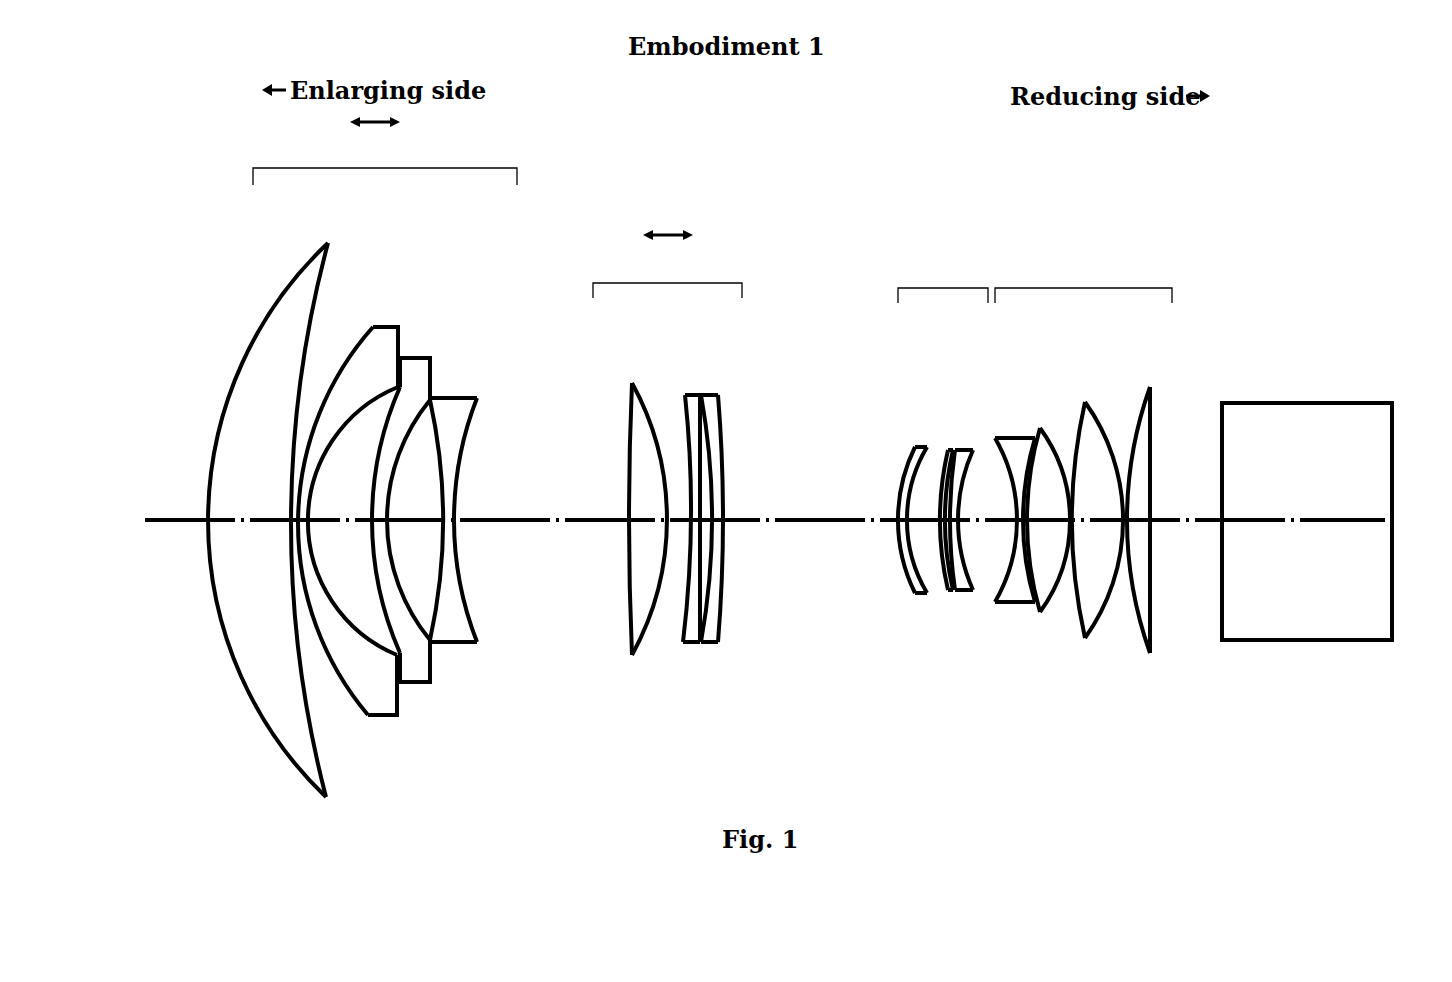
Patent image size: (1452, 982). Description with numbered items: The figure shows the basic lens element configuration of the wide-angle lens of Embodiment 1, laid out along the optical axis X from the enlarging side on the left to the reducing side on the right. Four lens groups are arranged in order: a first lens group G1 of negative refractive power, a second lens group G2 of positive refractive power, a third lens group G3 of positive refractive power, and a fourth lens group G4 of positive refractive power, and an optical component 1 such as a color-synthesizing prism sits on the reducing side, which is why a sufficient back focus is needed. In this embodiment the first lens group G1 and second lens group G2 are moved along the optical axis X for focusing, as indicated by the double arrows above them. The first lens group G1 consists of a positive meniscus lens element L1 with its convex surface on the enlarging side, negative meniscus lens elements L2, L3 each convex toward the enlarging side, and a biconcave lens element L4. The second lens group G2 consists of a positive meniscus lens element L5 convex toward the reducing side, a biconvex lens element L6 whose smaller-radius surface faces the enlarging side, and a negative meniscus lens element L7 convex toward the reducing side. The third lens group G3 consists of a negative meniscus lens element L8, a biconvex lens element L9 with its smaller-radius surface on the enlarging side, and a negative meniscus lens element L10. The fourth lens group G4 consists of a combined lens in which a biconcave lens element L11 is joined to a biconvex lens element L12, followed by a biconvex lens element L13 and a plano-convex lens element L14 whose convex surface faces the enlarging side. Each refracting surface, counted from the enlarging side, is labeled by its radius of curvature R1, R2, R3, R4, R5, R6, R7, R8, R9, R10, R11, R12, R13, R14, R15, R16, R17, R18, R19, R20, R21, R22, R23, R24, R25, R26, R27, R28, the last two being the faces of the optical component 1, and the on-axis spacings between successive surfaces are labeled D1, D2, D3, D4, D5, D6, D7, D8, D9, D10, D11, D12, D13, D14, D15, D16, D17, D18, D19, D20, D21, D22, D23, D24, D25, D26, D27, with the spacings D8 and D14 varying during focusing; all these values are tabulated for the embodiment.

The optical component 1 is at (1309, 489).
The optical axis X is at (163, 530).
The first lens group G1 is at (385, 151).
The second lens group G2 is at (667, 264).
The third lens group G3 is at (943, 278).
The fourth lens group G4 is at (1083, 278).
The positive meniscus lens element L1 is at (274, 486).
The negative meniscus lens element L2 is at (348, 491).
The negative meniscus lens element L3 is at (391, 485).
The biconcave lens element L4 is at (451, 485).
The positive meniscus lens element L5 is at (631, 502).
The biconvex lens element L6 is at (721, 509).
The negative meniscus lens element L7 is at (747, 482).
The negative meniscus lens element L8 is at (915, 500).
The biconvex lens element L9 is at (943, 501).
The negative meniscus lens element L10 is at (976, 483).
The biconcave lens element L11 is at (1033, 496).
The biconvex lens element L12 is at (1051, 504).
The biconvex lens element L13 is at (1097, 501).
The plano-convex lens element L14 is at (1154, 505).
The radius of curvature of surface 1 R1 is at (226, 642).
The radius of curvature of surface 2 R2 is at (318, 730).
The radius of curvature of surface 3 R3 is at (349, 693).
The radius of curvature of surface 4 R4 is at (344, 610).
The radius of curvature of surface 5 R5 is at (374, 540).
The radius of curvature of surface 6 R6 is at (390, 500).
The radius of curvature of surface 7 R7 is at (438, 452).
The radius of curvature of surface 8 R8 is at (466, 474).
The radius of curvature of surface 9 R9 is at (630, 588).
The radius of curvature of surface 10 R10 is at (638, 658).
The radius of curvature of surface 11 R11 is at (684, 643).
The radius of curvature of surface 12 R12 is at (704, 612).
The radius of curvature of surface 13 R13 is at (706, 594).
The radius of curvature of surface 14 R14 is at (713, 588).
The radius of curvature of surface 15 R15 is at (904, 594).
The radius of curvature of surface 16 R16 is at (930, 595).
The radius of curvature of surface 17 R17 is at (942, 486).
The radius of curvature of surface 18 R18 is at (952, 472).
The radius of curvature of surface 19 R19 is at (960, 505).
The radius of curvature of surface 20 R20 is at (963, 482).
The radius of curvature of surface 21 R21 is at (1028, 504).
The radius of curvature of surface 22 R22 is at (1058, 446).
The radius of curvature of surface 23 R23 is at (1075, 630).
The radius of curvature of surface 24 R24 is at (1122, 644).
The radius of curvature of surface 25 R25 is at (1134, 656).
The radius of curvature of surface 26 R26 is at (1152, 650).
The radius of curvature of surface 27 R27 is at (1222, 625).
The radius of curvature of surface 28 R28 is at (1392, 625).
The on-axis spacing 1 D1 is at (250, 530).
The on-axis spacing 2 D2 is at (300, 530).
The on-axis spacing 3 D3 is at (304, 530).
The on-axis spacing 4 D4 is at (340, 530).
The on-axis spacing 5 D5 is at (380, 530).
The on-axis spacing 6 D6 is at (415, 530).
The on-axis spacing 7 D7 is at (449, 530).
The on-axis spacing 8 D8 is at (540, 530).
The on-axis spacing 9 D9 is at (645, 528).
The on-axis spacing 10 D10 is at (665, 528).
The on-axis spacing 11 D11 is at (678, 523).
The on-axis spacing 12 D12 is at (722, 569).
The on-axis spacing 13 D13 is at (727, 548).
The on-axis spacing 14 D14 is at (840, 530).
The on-axis spacing 15 D15 is at (888, 530).
The on-axis spacing 16 D16 is at (923, 523).
The on-axis spacing 17 D17 is at (946, 530).
The on-axis spacing 18 D18 is at (961, 530).
The on-axis spacing 19 D19 is at (982, 523).
The on-axis spacing 20 D20 is at (1003, 530).
The on-axis spacing 21 D21 is at (1043, 523).
The on-axis spacing 22 D22 is at (1044, 530).
The on-axis spacing 23 D23 is at (1093, 523).
The on-axis spacing 24 D24 is at (1120, 530).
The on-axis spacing 25 D25 is at (1160, 530).
The on-axis spacing 26 D26 is at (1180, 530).
The on-axis spacing 27 D27 is at (1290, 530).